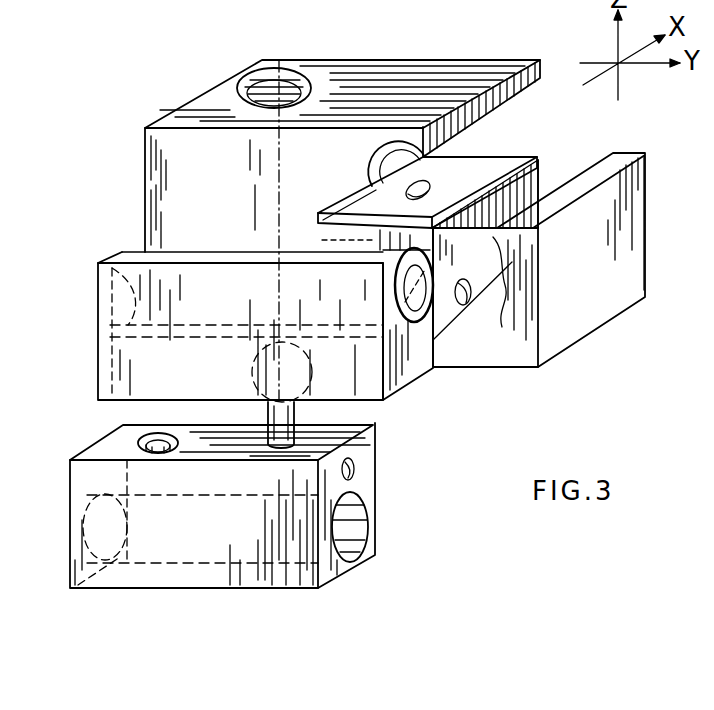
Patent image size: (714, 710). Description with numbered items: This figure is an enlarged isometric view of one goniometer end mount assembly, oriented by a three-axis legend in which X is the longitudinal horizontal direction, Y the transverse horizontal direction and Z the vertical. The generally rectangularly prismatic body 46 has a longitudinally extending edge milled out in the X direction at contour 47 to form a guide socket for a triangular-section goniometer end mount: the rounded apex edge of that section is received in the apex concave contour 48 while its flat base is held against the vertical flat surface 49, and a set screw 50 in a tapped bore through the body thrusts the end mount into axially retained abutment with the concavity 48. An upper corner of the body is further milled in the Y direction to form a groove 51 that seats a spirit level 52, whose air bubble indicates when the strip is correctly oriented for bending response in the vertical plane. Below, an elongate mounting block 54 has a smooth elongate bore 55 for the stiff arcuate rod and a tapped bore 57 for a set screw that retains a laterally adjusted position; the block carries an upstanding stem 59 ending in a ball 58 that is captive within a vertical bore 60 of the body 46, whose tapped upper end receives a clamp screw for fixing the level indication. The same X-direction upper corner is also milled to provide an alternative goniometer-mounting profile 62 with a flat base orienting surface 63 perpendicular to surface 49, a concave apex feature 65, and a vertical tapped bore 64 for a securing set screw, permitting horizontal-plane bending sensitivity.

The body 46 is at (144, 207).
The milled contour 47 is at (538, 182).
The apex concave contour 48 is at (500, 282).
The vertical flat surface 49 is at (494, 266).
The set screw 50 is at (460, 280).
The groove 51 is at (398, 325).
The spirit level 52 is at (408, 300).
The mounting block 54 is at (381, 491).
The elongate bore 55 is at (366, 543).
The tapped bore 57 is at (138, 443).
The ball 58 is at (301, 375).
The stem 59 is at (290, 434).
The vertical bore 60 is at (283, 70).
The alternative goniometer-mounting profile 62 is at (497, 118).
The flat base orienting surface 63 is at (320, 240).
The tapped bore 64 is at (372, 172).
The concave apex feature 65 is at (378, 183).